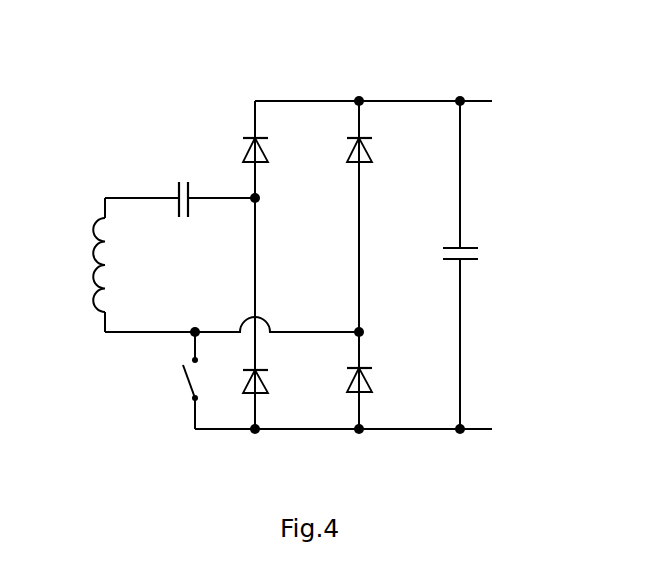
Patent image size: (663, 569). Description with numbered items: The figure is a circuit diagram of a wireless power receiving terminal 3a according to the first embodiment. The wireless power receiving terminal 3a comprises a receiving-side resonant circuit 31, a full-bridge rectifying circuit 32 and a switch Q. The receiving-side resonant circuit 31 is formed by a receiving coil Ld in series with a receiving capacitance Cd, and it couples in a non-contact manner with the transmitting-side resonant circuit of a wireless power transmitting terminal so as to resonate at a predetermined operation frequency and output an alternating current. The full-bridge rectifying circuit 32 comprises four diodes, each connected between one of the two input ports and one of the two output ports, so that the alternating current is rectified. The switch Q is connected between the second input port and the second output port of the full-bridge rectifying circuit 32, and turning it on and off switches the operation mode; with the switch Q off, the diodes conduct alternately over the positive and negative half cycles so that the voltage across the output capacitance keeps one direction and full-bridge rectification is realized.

The wireless power receiving terminal 3a is at (518, 35).
The receiving-side resonant circuit 31 is at (133, 119).
The full-bridge rectifying circuit 32 is at (312, 85).